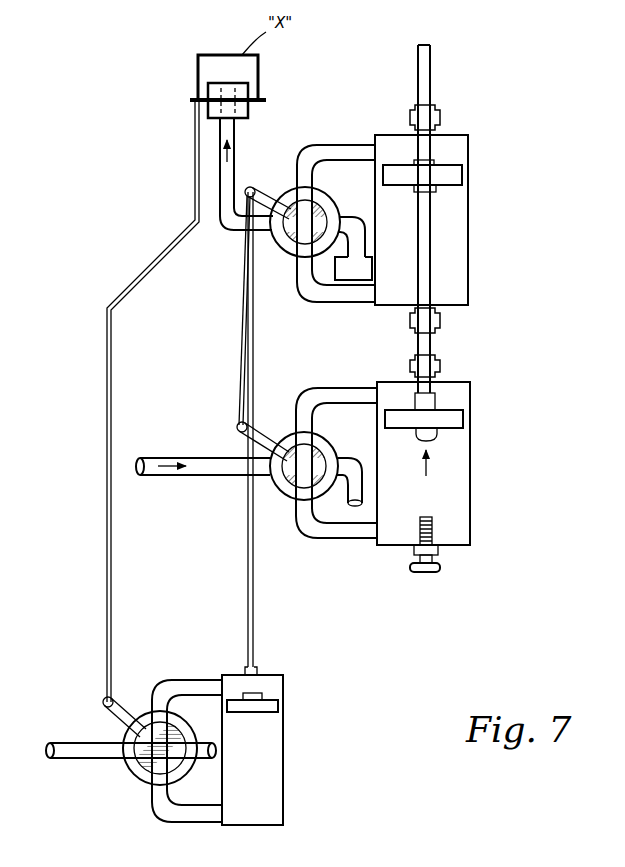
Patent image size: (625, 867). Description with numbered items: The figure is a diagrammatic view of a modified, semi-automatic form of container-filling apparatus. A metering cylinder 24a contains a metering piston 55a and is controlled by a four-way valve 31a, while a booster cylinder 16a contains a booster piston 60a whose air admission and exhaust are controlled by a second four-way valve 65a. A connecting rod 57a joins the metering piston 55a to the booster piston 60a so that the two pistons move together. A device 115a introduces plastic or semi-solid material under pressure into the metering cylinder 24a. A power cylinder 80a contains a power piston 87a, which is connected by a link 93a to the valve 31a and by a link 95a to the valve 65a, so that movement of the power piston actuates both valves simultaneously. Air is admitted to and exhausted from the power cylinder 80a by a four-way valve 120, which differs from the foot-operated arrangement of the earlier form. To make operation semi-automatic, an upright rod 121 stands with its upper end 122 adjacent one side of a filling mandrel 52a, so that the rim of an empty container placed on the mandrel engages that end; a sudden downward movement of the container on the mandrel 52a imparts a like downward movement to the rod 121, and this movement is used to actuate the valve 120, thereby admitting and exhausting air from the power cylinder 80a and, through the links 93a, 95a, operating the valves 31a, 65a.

The filling mandrel 52a is at (242, 92).
The upper end of rod 122 is at (195, 135).
The upright rod 121 is at (107, 522).
The four-way valve 31a is at (314, 193).
The device 115a is at (354, 270).
The metering cylinder 24a is at (471, 252).
The metering piston 55a is at (456, 177).
The connecting rod 57a is at (428, 343).
The link 95a is at (243, 355).
The link 93a is at (248, 590).
The four-way valve 65a is at (288, 431).
The booster cylinder 16a is at (474, 496).
The booster piston 60a is at (455, 420).
The four-way valve 120 is at (136, 781).
The power cylinder 80a is at (286, 787).
The power piston 87a is at (277, 705).